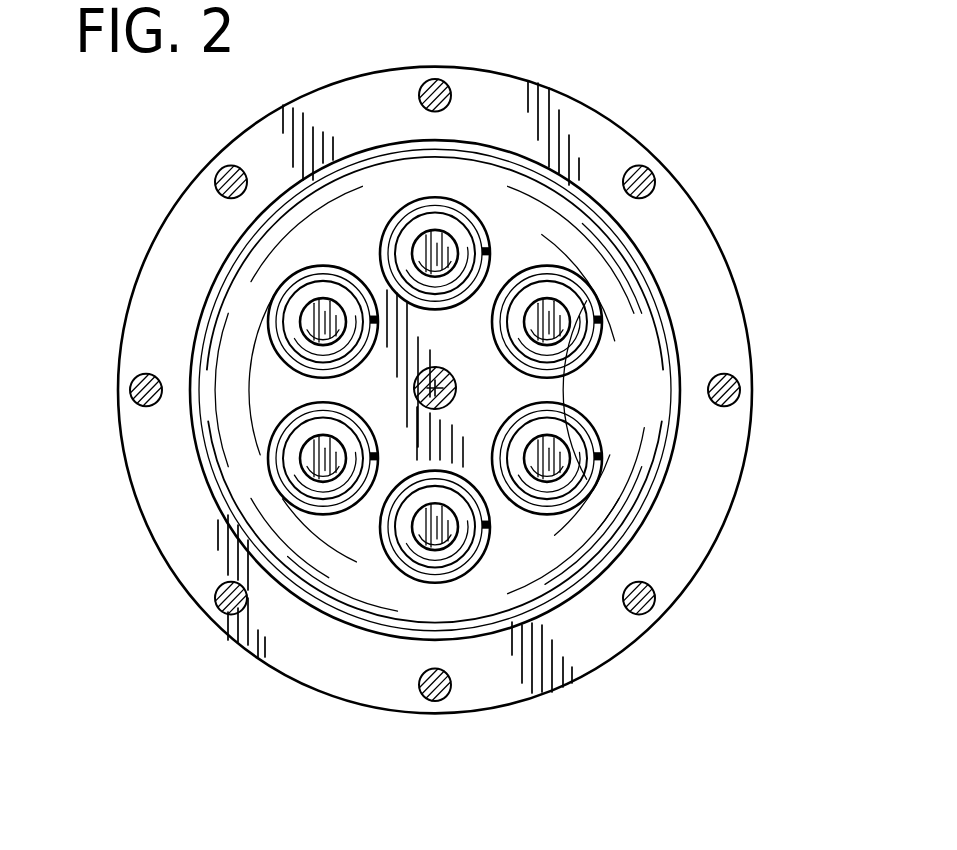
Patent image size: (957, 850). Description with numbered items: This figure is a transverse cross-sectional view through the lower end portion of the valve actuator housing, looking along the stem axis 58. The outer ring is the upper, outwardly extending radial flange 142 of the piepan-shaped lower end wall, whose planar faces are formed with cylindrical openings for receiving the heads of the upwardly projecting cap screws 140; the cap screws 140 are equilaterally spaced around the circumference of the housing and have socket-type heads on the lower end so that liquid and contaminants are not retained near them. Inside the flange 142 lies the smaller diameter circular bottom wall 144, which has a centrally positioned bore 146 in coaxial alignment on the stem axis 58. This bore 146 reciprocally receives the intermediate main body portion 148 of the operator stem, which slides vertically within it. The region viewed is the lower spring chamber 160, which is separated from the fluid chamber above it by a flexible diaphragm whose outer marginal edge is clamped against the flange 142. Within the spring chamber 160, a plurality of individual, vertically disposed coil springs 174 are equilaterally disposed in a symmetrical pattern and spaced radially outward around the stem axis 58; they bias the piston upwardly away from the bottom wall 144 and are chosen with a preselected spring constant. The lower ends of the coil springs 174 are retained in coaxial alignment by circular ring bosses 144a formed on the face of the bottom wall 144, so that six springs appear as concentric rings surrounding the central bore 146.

The cap screws 140 is at (450, 84).
The radial flange 142 is at (346, 657).
The bottom wall 144 is at (456, 612).
The ring bosses 144a is at (410, 229).
The bore 146 is at (415, 384).
The main body portion 148 is at (449, 369).
The stem axis 58 is at (457, 388).
The spring chamber 160 is at (610, 418).
The coil springs 174 is at (552, 266).